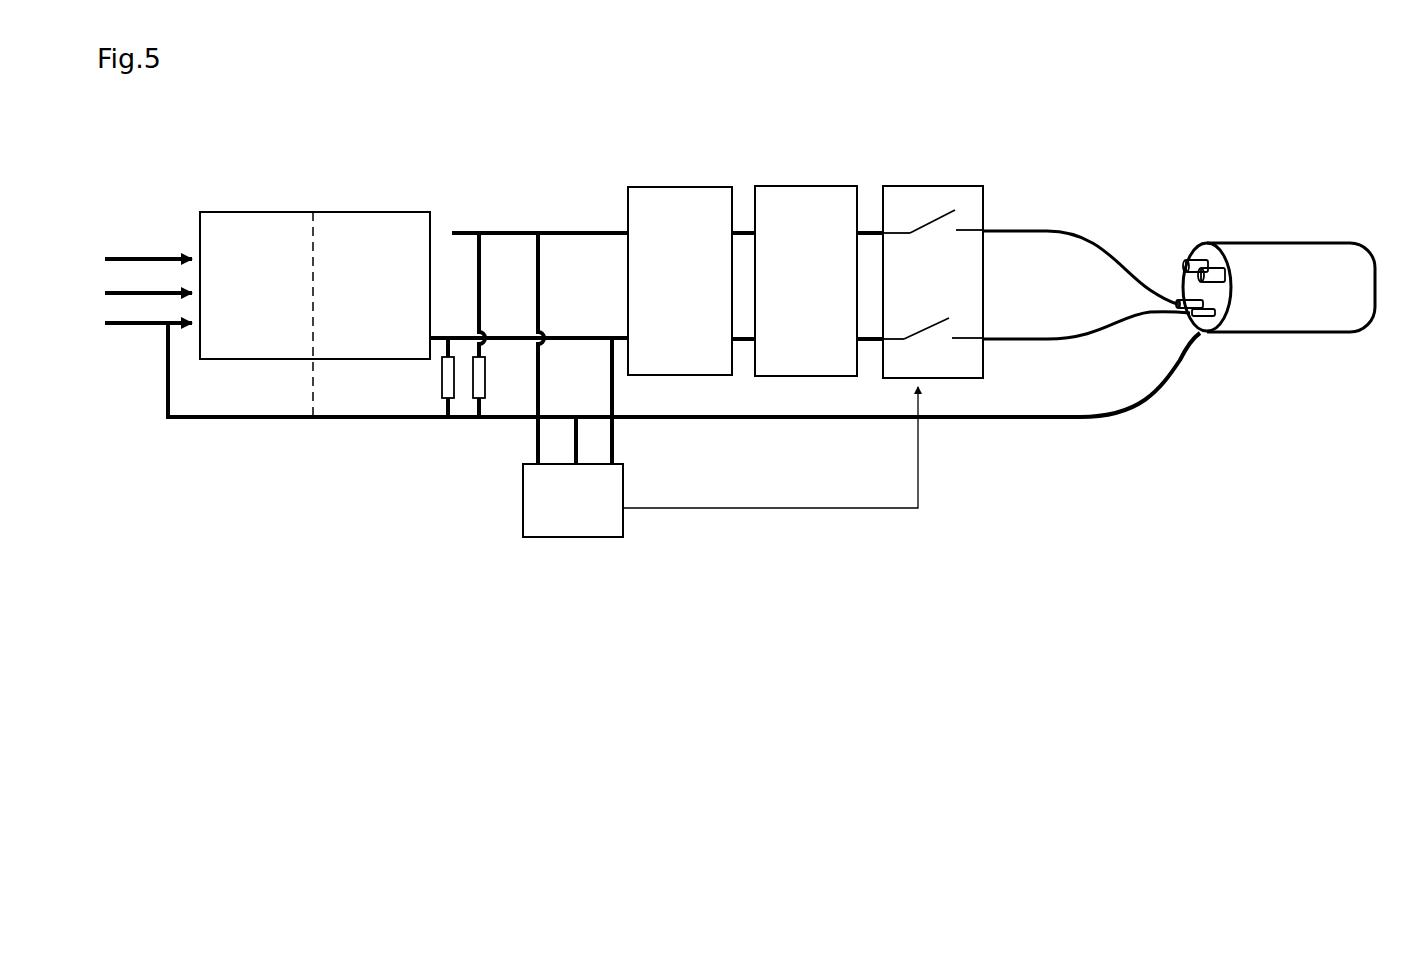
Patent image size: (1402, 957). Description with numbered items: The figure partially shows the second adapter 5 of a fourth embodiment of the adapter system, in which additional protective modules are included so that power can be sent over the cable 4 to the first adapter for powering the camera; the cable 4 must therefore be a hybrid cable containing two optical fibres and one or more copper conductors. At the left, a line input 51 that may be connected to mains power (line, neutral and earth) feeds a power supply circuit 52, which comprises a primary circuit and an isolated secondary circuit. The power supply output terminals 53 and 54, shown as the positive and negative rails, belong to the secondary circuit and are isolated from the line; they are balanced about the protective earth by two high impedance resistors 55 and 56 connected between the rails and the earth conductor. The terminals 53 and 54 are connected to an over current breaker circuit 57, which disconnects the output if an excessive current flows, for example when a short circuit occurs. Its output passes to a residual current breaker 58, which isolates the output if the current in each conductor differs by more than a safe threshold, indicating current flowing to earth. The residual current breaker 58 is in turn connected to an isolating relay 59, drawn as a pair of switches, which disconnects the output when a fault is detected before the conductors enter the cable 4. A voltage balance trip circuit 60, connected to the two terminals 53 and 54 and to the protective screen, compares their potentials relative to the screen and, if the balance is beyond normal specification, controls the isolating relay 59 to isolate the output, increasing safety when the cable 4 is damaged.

The cable 4 is at (1256, 232).
The second adapter 5 is at (1108, 154).
The line input 51 is at (120, 243).
The power supply circuit 52 is at (282, 210).
The power supply output terminal 53 is at (480, 228).
The power supply output terminal 54 is at (465, 332).
The high impedance resistor 55 is at (440, 371).
The high impedance resistor 56 is at (490, 362).
The over current breaker circuit 57 is at (671, 174).
The residual current breaker 58 is at (798, 170).
The isolating relay 59 is at (908, 170).
The voltage balance trip circuit 60 is at (518, 495).